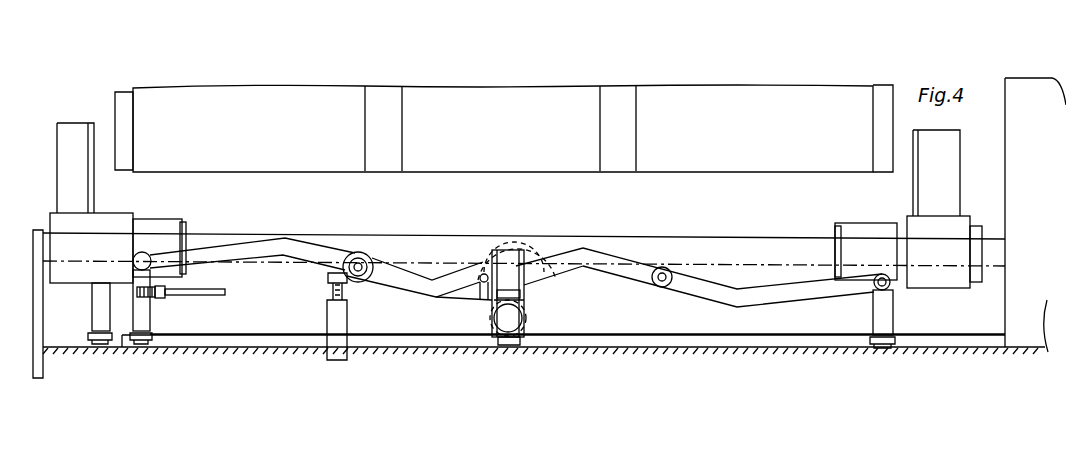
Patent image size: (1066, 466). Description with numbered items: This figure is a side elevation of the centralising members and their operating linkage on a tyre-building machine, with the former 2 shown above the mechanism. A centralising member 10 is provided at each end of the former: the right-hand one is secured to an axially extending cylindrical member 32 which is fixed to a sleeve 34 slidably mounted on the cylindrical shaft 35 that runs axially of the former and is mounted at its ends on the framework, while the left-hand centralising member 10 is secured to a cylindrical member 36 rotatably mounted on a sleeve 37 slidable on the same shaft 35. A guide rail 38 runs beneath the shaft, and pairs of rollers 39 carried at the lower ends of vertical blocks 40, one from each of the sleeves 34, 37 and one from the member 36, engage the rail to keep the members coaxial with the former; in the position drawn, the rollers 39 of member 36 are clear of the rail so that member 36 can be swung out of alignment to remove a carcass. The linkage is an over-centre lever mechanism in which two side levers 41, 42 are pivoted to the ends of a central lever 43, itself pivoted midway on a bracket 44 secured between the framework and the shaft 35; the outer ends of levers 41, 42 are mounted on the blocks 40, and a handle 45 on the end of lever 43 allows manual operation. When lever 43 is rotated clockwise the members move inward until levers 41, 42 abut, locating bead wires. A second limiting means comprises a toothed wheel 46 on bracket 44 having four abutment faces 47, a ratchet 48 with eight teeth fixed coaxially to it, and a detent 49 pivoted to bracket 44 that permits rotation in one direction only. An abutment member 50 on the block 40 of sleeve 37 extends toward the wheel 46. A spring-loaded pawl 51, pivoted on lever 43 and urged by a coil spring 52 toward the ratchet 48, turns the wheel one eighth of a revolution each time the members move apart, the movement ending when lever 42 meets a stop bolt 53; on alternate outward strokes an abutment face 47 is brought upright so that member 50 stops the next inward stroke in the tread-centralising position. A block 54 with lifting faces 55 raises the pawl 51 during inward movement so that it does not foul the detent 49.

The roller 2 is at (318, 96).
The centralising member 10 is at (57, 128).
The cylindrical member 32 is at (948, 288).
The sleeve 34 is at (864, 222).
The cylindrical shaft 35 is at (757, 240).
The cylindrical member 36 is at (66, 278).
The sleeve 37 is at (168, 222).
The guide rail 38 is at (678, 335).
The rollers 39 is at (87, 337).
The vertical block 40 is at (97, 300).
The side lever 41 is at (790, 298).
The side lever 42 is at (246, 256).
The central lever 43 is at (432, 290).
The bracket 44 is at (500, 252).
The handle 45 is at (354, 252).
The toothed wheel 46 is at (522, 335).
The abutment faces 47 is at (492, 302).
The ratchet 48 is at (526, 322).
The detent 49 is at (520, 293).
The abutment member 50 is at (215, 289).
The pawl 51 is at (480, 303).
The coil spring 52 is at (468, 267).
The stop bolt 53 is at (327, 279).
The block 54 is at (540, 258).
The lifting faces 55 is at (517, 244).